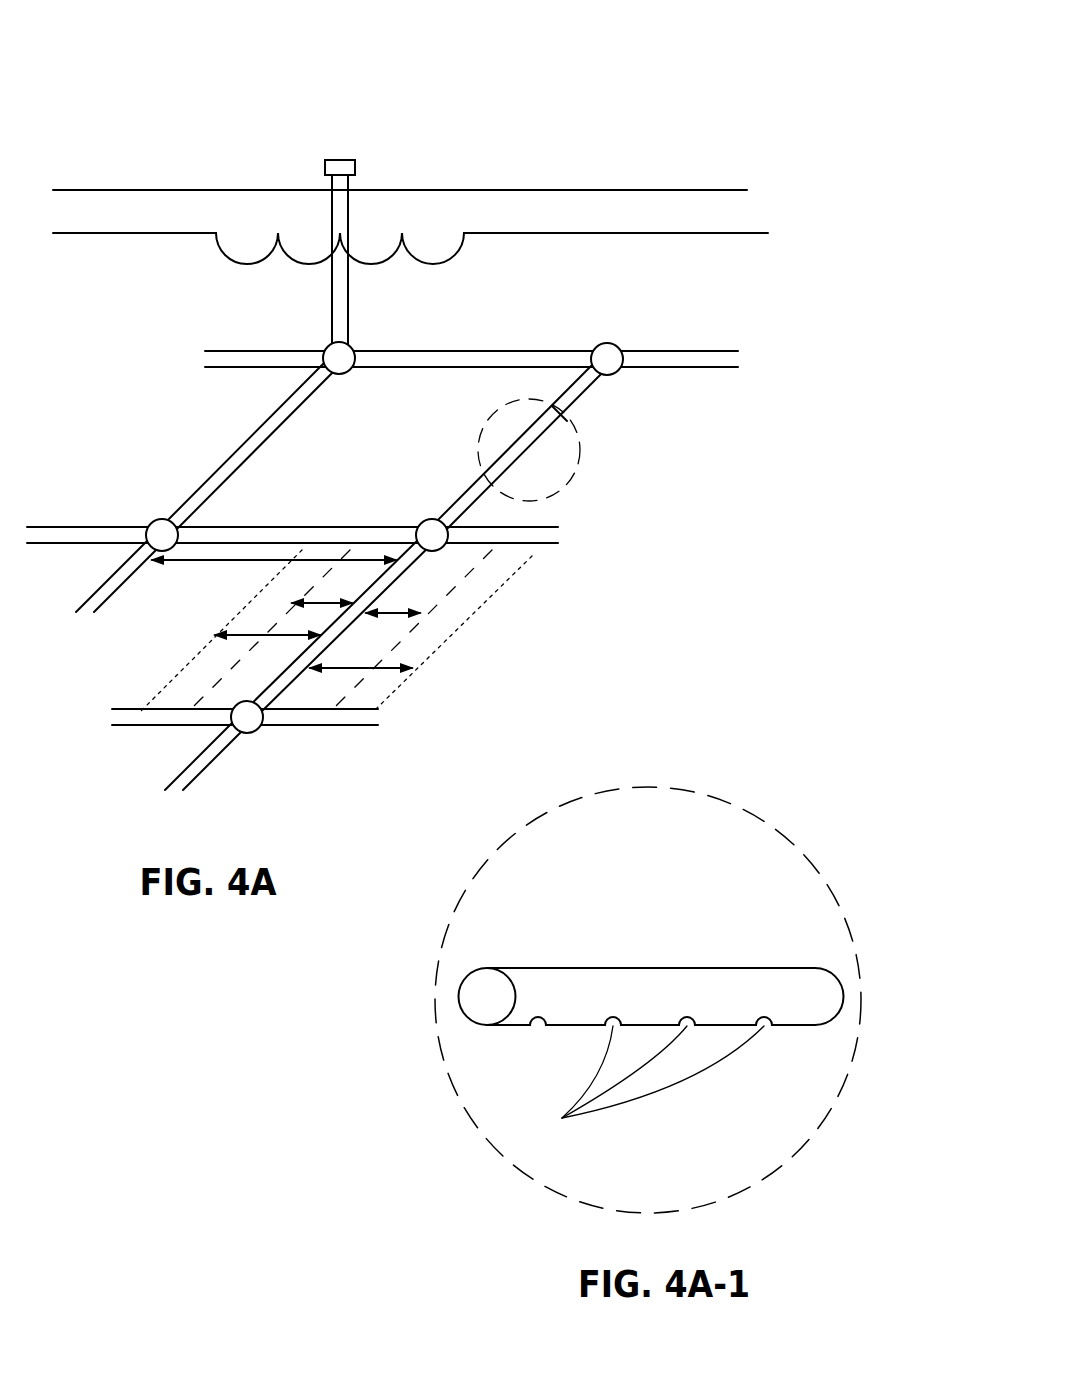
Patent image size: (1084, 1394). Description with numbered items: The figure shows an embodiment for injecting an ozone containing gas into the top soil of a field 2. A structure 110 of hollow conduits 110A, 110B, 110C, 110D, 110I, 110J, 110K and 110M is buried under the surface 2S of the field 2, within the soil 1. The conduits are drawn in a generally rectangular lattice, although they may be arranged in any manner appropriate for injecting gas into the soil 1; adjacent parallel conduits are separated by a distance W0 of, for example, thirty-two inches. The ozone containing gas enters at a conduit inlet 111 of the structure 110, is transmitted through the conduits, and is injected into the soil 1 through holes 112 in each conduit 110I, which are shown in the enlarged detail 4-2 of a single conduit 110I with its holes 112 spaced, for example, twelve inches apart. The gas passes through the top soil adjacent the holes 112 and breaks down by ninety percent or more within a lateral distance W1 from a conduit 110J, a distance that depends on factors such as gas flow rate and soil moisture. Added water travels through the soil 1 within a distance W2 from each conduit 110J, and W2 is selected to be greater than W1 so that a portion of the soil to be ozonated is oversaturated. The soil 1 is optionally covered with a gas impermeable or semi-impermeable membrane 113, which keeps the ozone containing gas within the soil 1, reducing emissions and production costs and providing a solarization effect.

In FIG. 4A, the field 2 is at (636, 38).
In FIG. 4A, the surface 2S is at (762, 234).
In FIG. 4A, the soil 1 is at (530, 296).
In FIG. 4A, the conduit inlet 111 is at (323, 163).
In FIG. 4A, the membrane 113 is at (690, 190).
In FIG. 4A, the structure 110 is at (582, 314).
In FIG. 4A, the hollow conduit 110A is at (444, 368).
In FIG. 4A, the hollow conduit 110B is at (240, 449).
In FIG. 4A, the hollow conduit 110C is at (470, 488).
In FIG. 4A, the hollow conduit 110D is at (290, 527).
In FIG. 4A, the conduit 110I is at (525, 547).
In FIG. 4A-1, the conduit 110I is at (708, 966).
In FIG. 4A, the conduit 110J is at (286, 690).
In FIG. 4A, the hollow conduit 110K is at (110, 592).
In FIG. 4A, the hollow conduit 110M is at (216, 762).
In FIG. 4A-1, the holes 112 is at (562, 1118).
In FIG. 4A, the detail circle 4-2 is at (566, 486).
In FIG. 4A, the distance W0 is at (222, 562).
In FIG. 4A, the lateral distance W1 is at (323, 603).
In FIG. 4A, the distance W2 is at (273, 637).